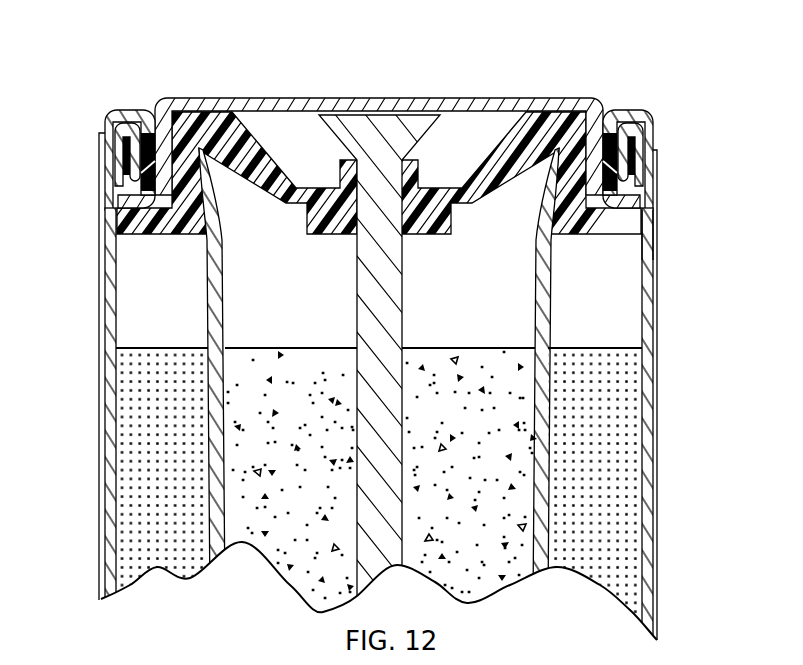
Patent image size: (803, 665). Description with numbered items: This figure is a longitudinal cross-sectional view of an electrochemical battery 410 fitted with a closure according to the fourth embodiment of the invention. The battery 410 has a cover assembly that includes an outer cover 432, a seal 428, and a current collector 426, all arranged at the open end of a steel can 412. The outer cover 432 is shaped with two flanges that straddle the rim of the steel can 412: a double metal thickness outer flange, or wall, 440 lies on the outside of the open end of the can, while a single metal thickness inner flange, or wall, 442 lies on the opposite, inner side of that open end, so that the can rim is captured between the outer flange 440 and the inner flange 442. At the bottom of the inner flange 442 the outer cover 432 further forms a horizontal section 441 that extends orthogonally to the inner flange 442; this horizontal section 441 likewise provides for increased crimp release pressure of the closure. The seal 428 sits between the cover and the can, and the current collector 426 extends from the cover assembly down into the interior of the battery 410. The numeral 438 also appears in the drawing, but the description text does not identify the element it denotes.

The battery 410 is at (72, 238).
The steel can 412 is at (648, 398).
The current collector 426 is at (393, 311).
The seal 428 is at (233, 147).
The outer cover 432 is at (413, 99).
The outer insulating jacket 438 is at (660, 457).
The horizontal section 441 is at (655, 228).
The outer flange (wall) 440 is at (647, 130).
The inner flange (wall) 442 is at (600, 125).